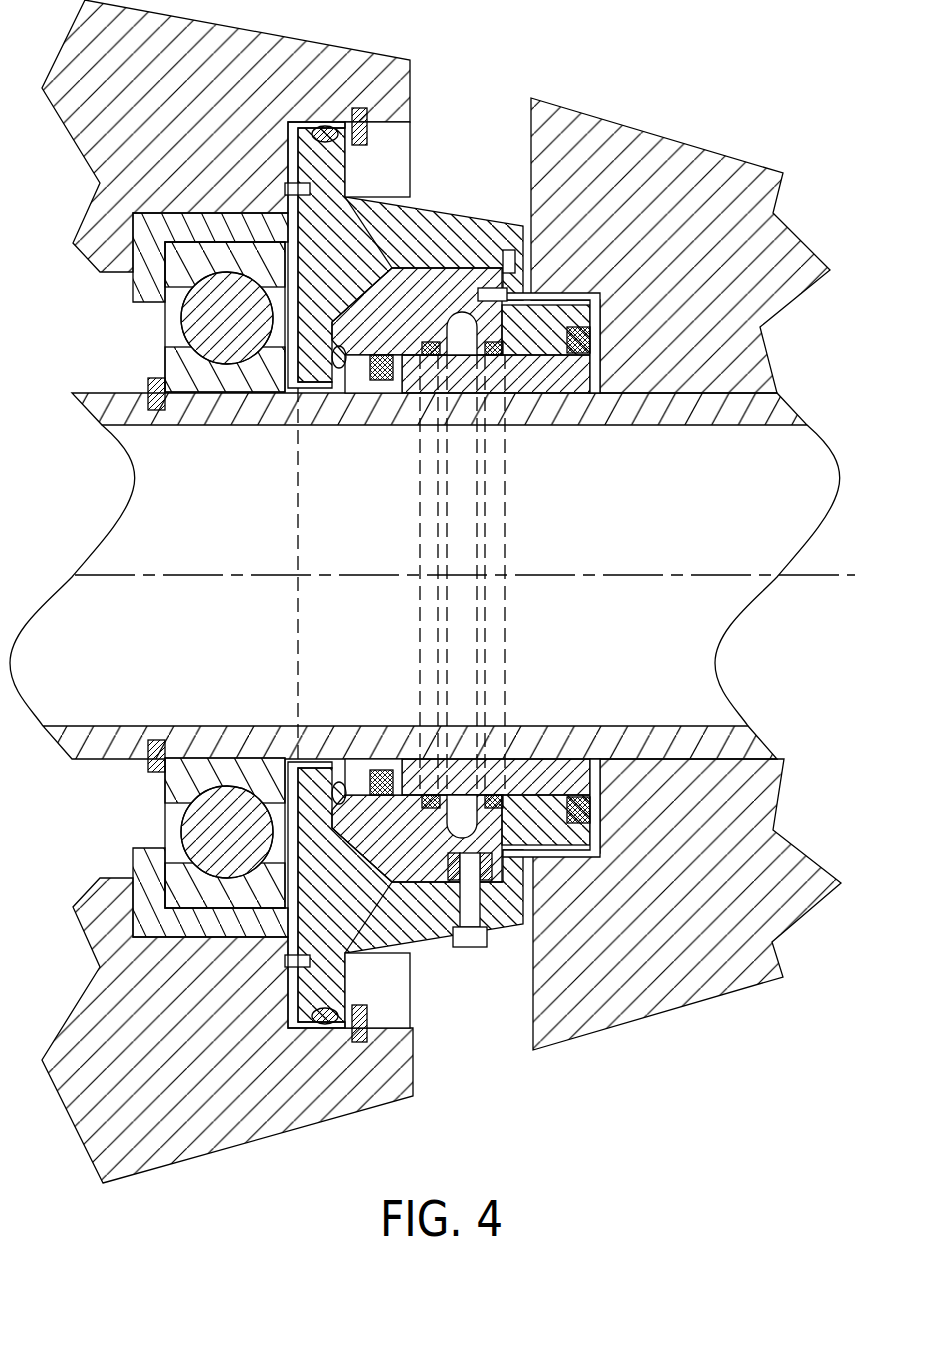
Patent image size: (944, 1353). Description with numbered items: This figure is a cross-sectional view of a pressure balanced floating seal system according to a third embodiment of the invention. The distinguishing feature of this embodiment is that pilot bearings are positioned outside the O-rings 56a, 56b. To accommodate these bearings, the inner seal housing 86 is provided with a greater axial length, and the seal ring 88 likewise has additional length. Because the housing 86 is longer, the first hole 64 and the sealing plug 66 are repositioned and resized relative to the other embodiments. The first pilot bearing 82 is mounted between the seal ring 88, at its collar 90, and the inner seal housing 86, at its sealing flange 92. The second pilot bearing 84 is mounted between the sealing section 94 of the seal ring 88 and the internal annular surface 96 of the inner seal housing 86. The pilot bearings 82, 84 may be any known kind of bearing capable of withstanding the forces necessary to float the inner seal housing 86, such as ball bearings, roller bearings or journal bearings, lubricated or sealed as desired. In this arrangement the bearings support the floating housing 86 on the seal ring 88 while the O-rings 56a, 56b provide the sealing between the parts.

The O-ring 56a is at (432, 390).
The O-ring 56b is at (493, 385).
The first hole 64 is at (465, 290).
The sealing plug 66 is at (503, 293).
The first pilot bearing 82 is at (370, 382).
The second pilot bearing 84 is at (600, 340).
The inner seal housing 86 is at (405, 287).
The seal ring 88 is at (555, 385).
The collar 90 is at (300, 395).
The sealing flange 92 is at (333, 395).
The sealing section 94 is at (510, 385).
The internal annular surface 96 is at (598, 355).